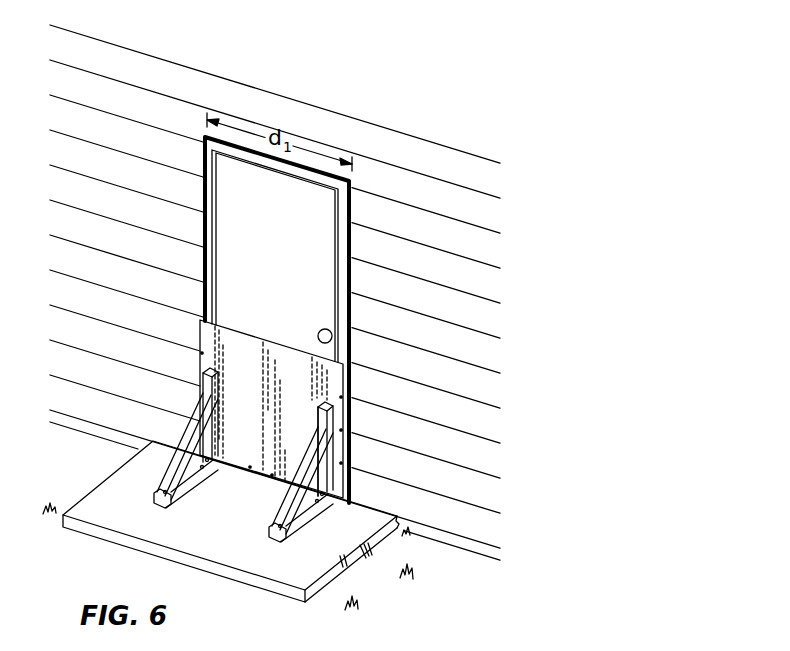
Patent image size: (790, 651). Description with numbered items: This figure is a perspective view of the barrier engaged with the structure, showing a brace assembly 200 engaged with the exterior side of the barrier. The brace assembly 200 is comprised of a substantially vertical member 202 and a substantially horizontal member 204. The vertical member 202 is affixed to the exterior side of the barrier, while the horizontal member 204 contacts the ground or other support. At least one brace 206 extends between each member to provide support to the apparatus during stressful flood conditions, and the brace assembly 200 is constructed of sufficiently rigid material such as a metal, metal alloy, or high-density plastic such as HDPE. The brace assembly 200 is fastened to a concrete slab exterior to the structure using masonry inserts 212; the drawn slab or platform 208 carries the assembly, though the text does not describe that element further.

The brace assembly 200 is at (196, 402).
The vertical member 202 is at (327, 473).
The horizontal member 204 is at (313, 505).
The brace 206 is at (293, 489).
The platform base 208 is at (318, 567).
The masonry insert 212 is at (167, 490).